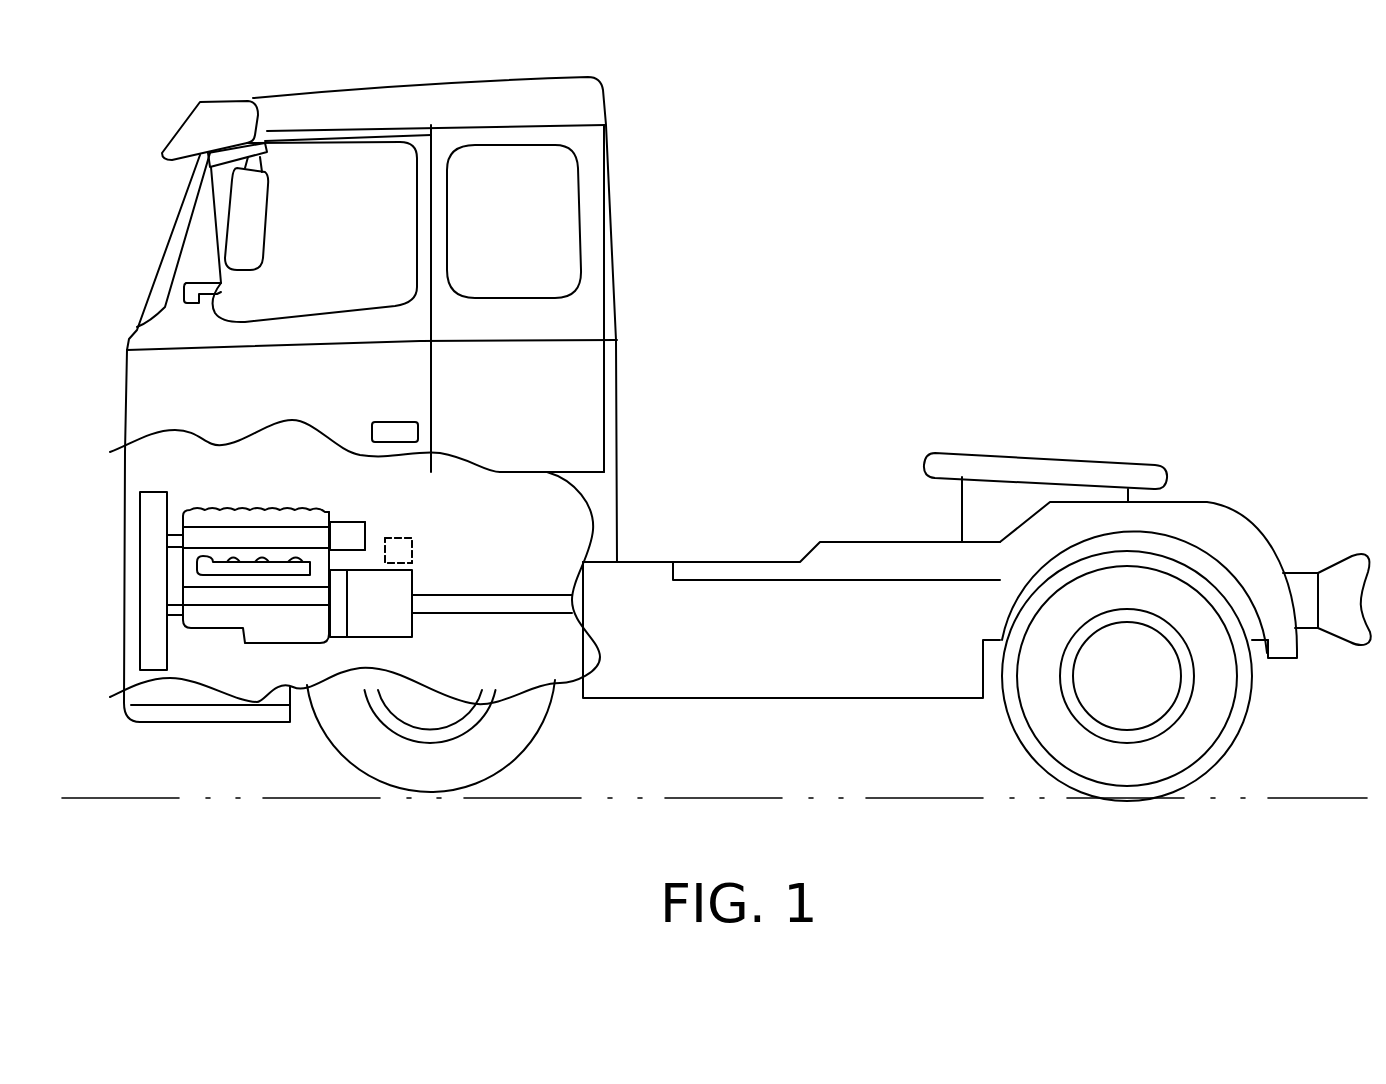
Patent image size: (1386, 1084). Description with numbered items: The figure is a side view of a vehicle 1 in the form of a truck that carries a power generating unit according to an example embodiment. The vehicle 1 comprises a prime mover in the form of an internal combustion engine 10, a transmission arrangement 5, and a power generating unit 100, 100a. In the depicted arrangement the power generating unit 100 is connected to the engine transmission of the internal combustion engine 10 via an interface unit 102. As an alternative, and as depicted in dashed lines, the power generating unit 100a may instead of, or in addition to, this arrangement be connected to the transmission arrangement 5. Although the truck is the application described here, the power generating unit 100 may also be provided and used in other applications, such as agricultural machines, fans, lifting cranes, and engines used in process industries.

The vehicle 1 is at (788, 215).
The transmission arrangement 5 is at (377, 613).
The internal combustion engine 10 is at (237, 612).
The power generating unit 100 is at (350, 522).
The power generating unit 100a is at (405, 538).
The interface unit 102 is at (332, 522).